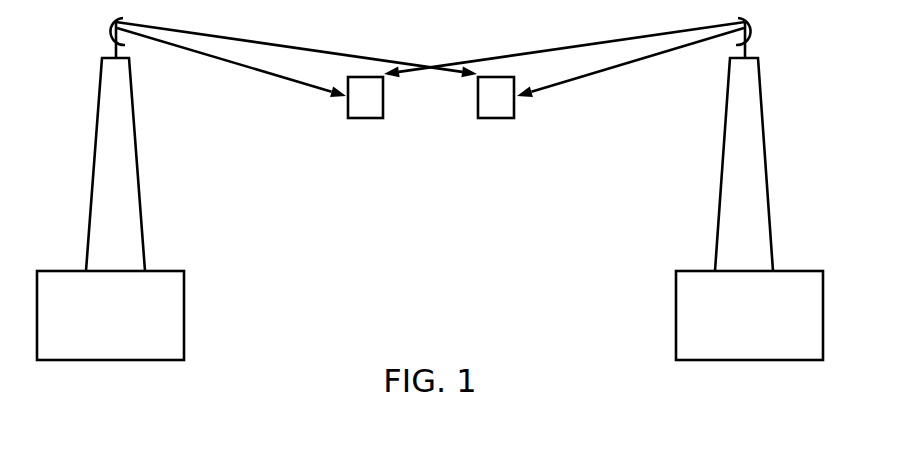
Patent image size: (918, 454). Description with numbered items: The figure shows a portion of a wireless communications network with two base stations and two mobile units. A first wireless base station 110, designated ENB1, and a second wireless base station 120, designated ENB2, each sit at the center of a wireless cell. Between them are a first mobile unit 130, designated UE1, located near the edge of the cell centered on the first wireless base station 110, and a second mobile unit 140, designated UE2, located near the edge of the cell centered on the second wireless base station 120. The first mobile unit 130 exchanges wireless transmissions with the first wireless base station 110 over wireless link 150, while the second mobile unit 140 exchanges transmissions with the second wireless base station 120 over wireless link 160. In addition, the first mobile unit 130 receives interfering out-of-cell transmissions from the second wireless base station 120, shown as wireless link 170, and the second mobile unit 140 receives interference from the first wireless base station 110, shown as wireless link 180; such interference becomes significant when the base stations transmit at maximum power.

The first wireless base station 110 is at (185, 296).
The second wireless base station 120 is at (824, 296).
The first mobile unit 130 is at (346, 117).
The second mobile unit 140 is at (515, 117).
The wireless link 150 is at (238, 67).
The wireless link 160 is at (604, 69).
The wireless link 170 is at (611, 41).
The wireless link 180 is at (257, 43).